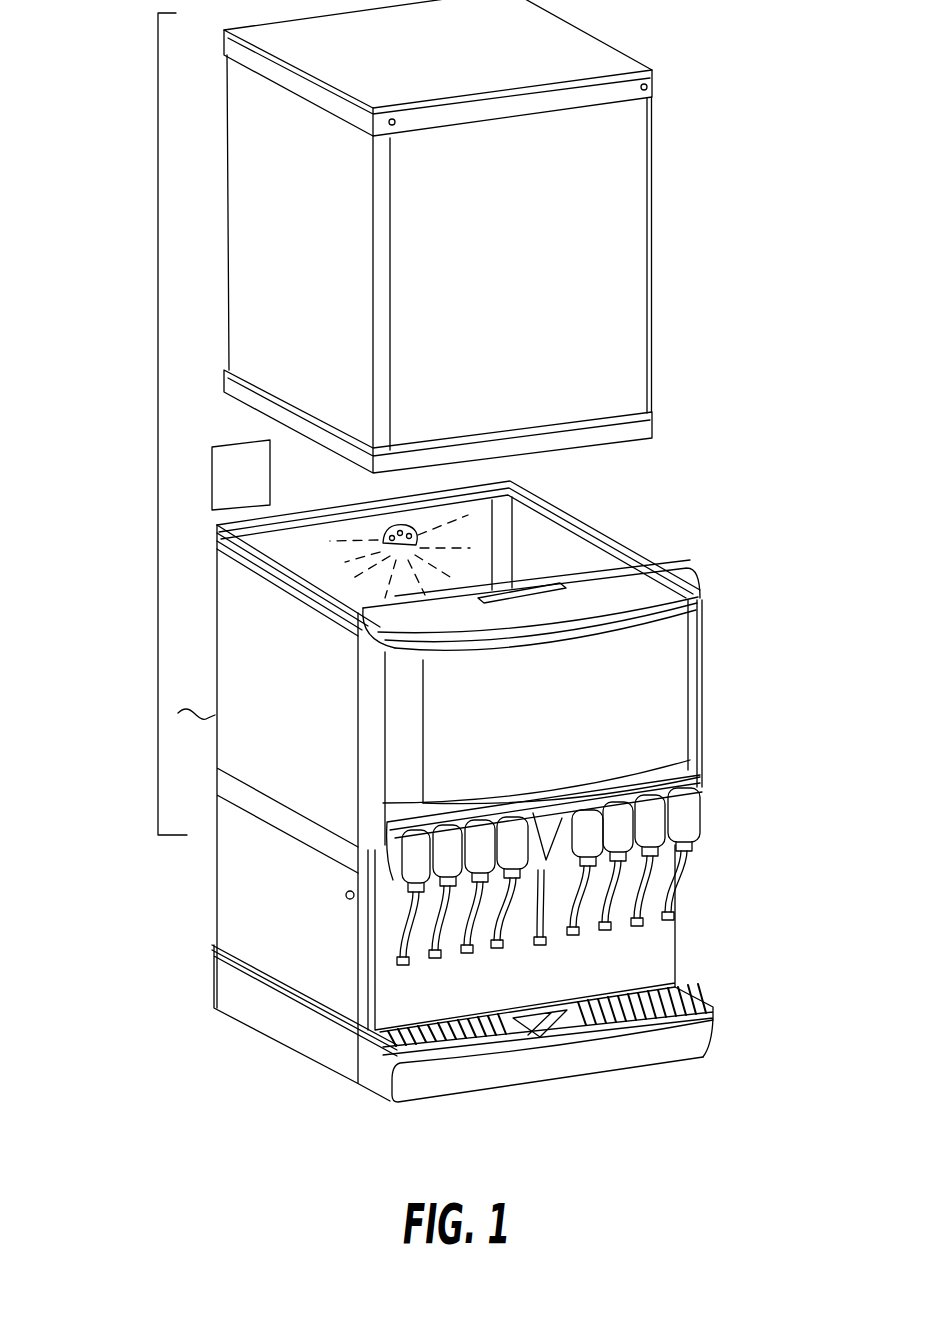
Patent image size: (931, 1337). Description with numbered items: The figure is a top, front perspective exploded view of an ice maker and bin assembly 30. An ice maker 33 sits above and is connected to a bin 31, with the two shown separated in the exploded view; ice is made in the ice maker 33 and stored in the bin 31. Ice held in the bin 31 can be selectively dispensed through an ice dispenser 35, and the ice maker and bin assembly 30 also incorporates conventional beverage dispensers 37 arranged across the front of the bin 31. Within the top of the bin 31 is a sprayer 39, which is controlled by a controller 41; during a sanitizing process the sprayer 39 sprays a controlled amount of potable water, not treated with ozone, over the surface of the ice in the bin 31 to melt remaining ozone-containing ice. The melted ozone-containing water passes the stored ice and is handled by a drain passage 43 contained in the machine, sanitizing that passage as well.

The ice maker and bin assembly 30 is at (158, 427).
The bin 31 is at (563, 553).
The ice maker 33 is at (653, 277).
The ice dispenser 35 is at (547, 817).
The beverage dispensers 37 is at (513, 828).
The sprayer 39 is at (407, 527).
The controller 41 is at (251, 490).
The drain passage 43 is at (186, 708).